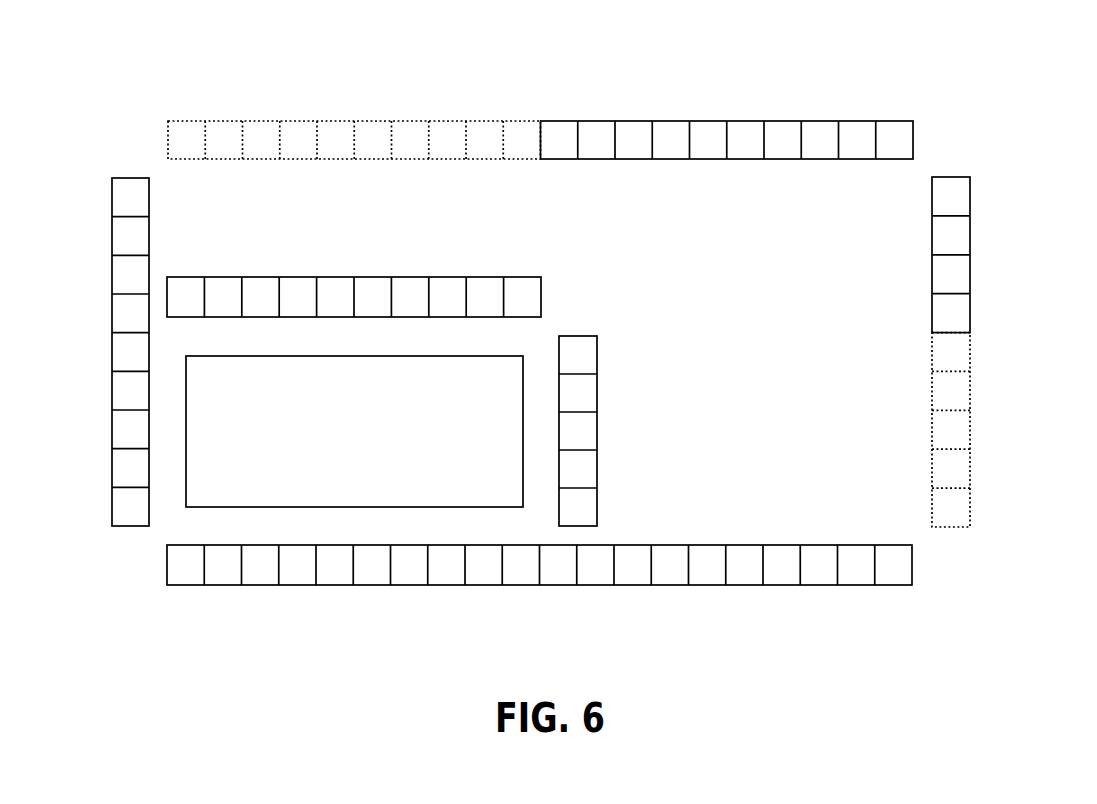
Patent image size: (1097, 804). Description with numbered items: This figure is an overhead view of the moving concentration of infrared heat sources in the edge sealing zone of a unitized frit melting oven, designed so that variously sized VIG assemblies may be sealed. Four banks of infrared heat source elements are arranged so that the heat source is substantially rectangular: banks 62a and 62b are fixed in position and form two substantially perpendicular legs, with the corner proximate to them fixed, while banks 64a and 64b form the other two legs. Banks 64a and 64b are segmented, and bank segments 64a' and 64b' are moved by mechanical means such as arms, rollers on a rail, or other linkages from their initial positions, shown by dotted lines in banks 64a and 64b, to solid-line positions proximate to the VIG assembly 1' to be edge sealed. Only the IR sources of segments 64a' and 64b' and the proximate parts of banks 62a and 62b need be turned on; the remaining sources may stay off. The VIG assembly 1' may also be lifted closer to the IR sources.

The IR source bank 64a is at (540, 108).
The bank segment 64a' is at (354, 274).
The IR source bank 64b is at (987, 352).
The bank segment 64b' is at (615, 431).
The fixed IR source bank 62a is at (316, 606).
The fixed IR source bank 62b is at (90, 447).
The VIG assembly 1' is at (354, 431).